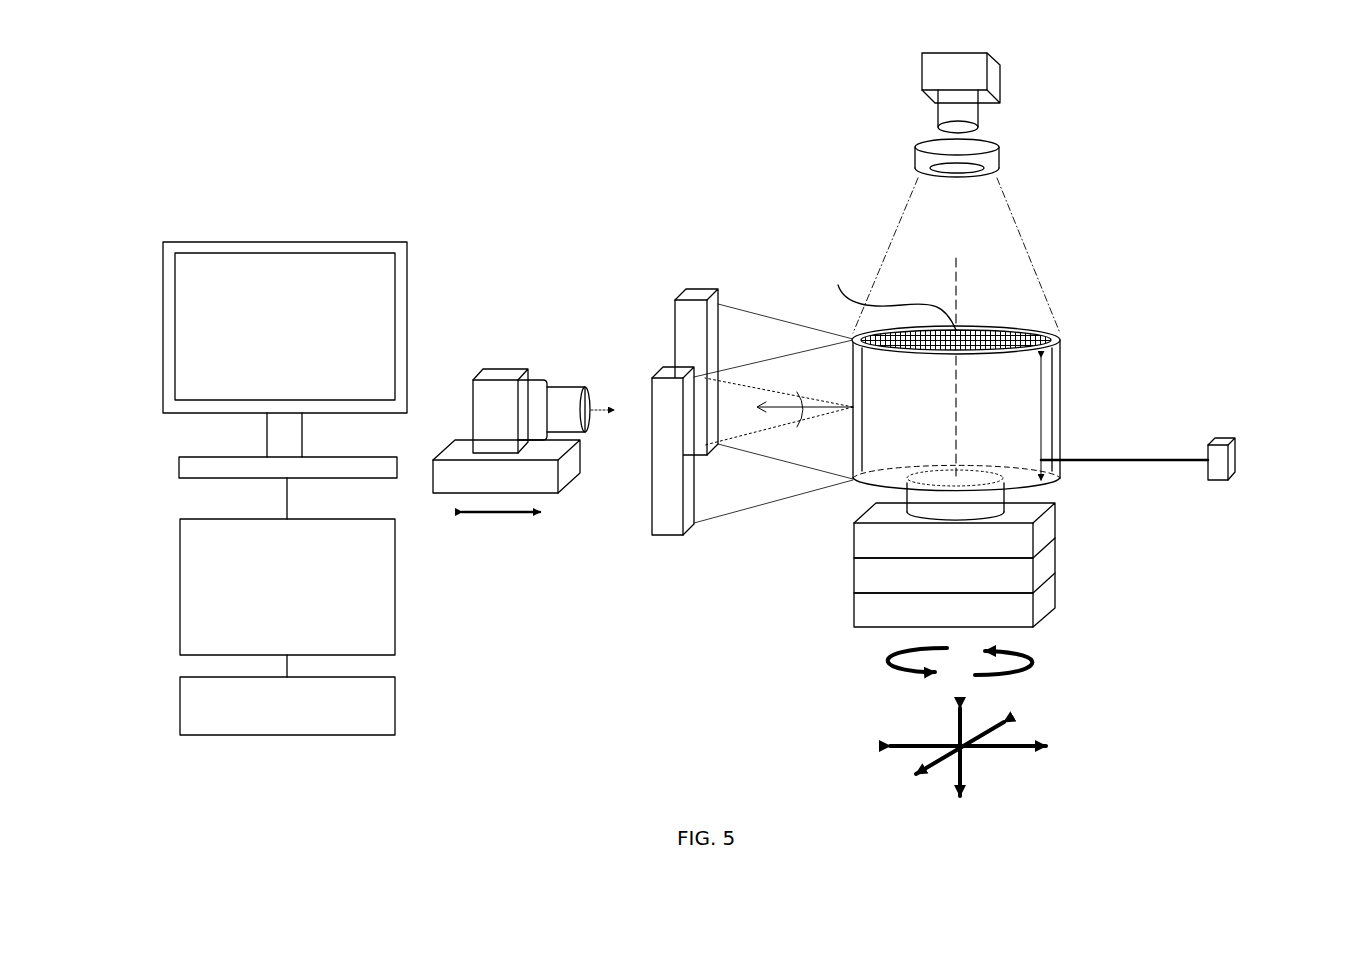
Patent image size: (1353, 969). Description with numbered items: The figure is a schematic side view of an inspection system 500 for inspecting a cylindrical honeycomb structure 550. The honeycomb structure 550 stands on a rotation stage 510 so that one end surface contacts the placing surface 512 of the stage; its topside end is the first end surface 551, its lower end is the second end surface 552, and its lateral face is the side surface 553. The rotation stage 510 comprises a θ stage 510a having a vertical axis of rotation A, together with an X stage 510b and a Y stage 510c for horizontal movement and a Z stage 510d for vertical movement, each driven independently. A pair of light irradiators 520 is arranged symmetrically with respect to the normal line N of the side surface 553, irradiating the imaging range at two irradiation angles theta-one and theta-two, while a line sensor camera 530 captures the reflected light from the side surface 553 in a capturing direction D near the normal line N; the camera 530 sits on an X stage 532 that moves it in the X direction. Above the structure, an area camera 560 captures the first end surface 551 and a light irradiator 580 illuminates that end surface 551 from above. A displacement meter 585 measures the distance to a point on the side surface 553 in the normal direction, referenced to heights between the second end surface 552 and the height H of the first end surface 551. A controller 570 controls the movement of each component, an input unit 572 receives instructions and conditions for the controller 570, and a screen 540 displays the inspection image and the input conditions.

The inspection system 500 is at (779, 166).
The rotation stage 510 is at (1055, 555).
The θ stage 510a is at (1004, 500).
The X stage 510b is at (1045, 537).
The Y stage 510c is at (1045, 568).
The Z stage 510d is at (1045, 598).
The placing surface 512 is at (983, 477).
The light irradiator 520 is at (675, 300).
The line sensor camera 530 is at (497, 366).
The X stage 532 is at (575, 478).
The screen 540 is at (298, 272).
The cylindrical honeycomb structure 550 is at (990, 401).
The first end surface 551 is at (1041, 333).
The second end surface 552 is at (875, 494).
The side surface 553 is at (1060, 405).
The area camera 560 is at (1000, 72).
The controller 570 is at (318, 601).
The input unit 572 is at (318, 719).
The light irradiator 580 is at (1000, 157).
The displacement meter 585 is at (1222, 440).